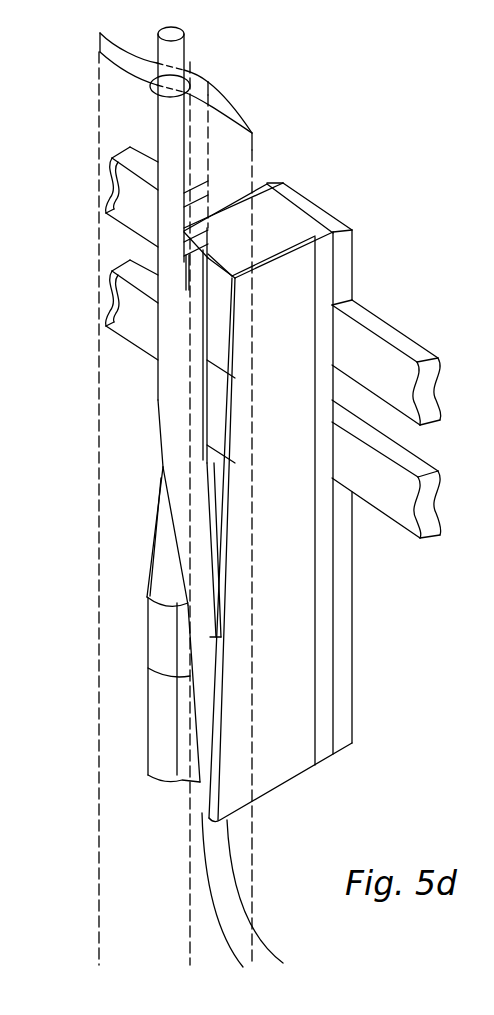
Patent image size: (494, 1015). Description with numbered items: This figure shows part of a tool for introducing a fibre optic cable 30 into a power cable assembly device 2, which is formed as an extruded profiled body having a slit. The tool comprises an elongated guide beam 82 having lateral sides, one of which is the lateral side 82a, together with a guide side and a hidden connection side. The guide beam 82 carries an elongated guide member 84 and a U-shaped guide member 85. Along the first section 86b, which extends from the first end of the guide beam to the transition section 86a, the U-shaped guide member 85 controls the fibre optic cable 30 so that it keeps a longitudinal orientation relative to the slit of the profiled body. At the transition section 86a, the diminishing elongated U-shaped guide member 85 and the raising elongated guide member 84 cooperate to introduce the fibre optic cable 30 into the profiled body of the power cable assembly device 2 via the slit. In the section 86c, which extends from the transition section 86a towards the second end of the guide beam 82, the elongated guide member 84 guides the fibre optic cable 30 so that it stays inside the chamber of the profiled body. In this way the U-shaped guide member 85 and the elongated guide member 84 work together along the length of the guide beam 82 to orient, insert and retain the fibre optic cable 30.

The power cable assembly device 2 is at (100, 136).
The fibre optic cable 30 is at (185, 52).
The elongated guide beam 82 is at (278, 228).
The lateral side 82a is at (285, 783).
The elongated guide member 84 is at (208, 260).
The U-shaped guide member 85 is at (185, 770).
The transition section 86a is at (127, 540).
The first section 86b is at (120, 712).
The section 86c is at (134, 412).